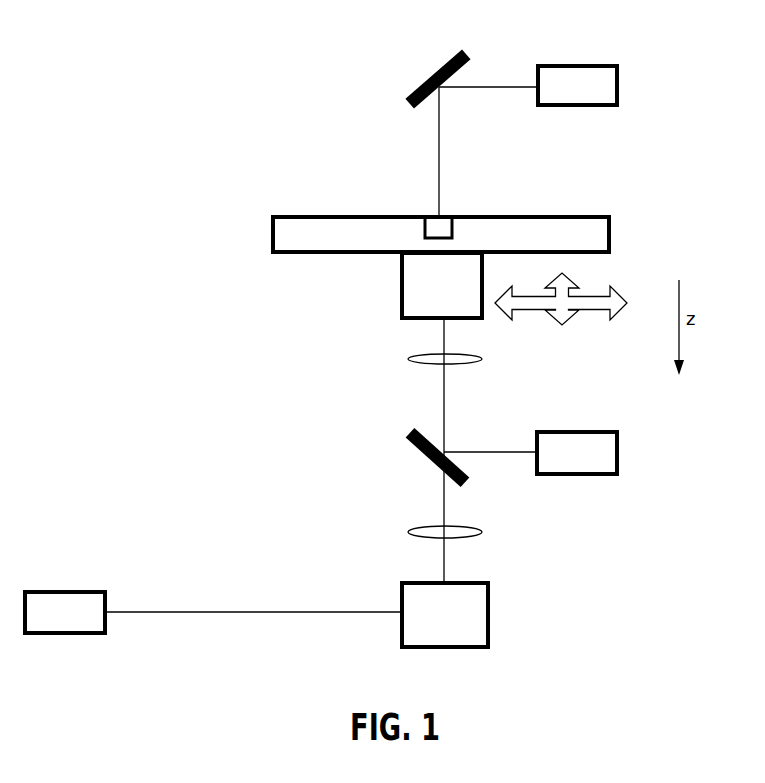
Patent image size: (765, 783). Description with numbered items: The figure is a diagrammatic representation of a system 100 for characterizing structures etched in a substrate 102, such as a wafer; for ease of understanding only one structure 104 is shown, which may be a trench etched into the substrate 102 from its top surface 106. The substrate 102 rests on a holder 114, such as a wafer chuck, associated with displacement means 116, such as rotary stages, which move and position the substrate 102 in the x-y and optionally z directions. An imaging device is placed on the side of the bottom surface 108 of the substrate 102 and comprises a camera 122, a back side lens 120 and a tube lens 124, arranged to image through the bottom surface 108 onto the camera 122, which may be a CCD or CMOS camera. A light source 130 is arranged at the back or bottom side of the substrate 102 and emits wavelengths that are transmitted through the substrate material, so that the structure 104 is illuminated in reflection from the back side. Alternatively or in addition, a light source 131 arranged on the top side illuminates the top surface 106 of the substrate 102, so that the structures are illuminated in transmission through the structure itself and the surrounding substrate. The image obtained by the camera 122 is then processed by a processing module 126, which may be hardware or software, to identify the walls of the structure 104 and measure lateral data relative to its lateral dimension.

The system 100 is at (140, 76).
The substrate 102 is at (609, 229).
The structure 104 is at (454, 227).
The top surface 106 is at (588, 216).
The bottom surface 108 is at (575, 254).
The holder 114 is at (458, 294).
The displacement means 116 is at (563, 328).
The back side lens 120 is at (410, 361).
The camera 122 is at (460, 620).
The tube lens 124 is at (410, 536).
The processing module 126 is at (81, 618).
The light source 130 is at (593, 462).
The light source 131 is at (593, 95).